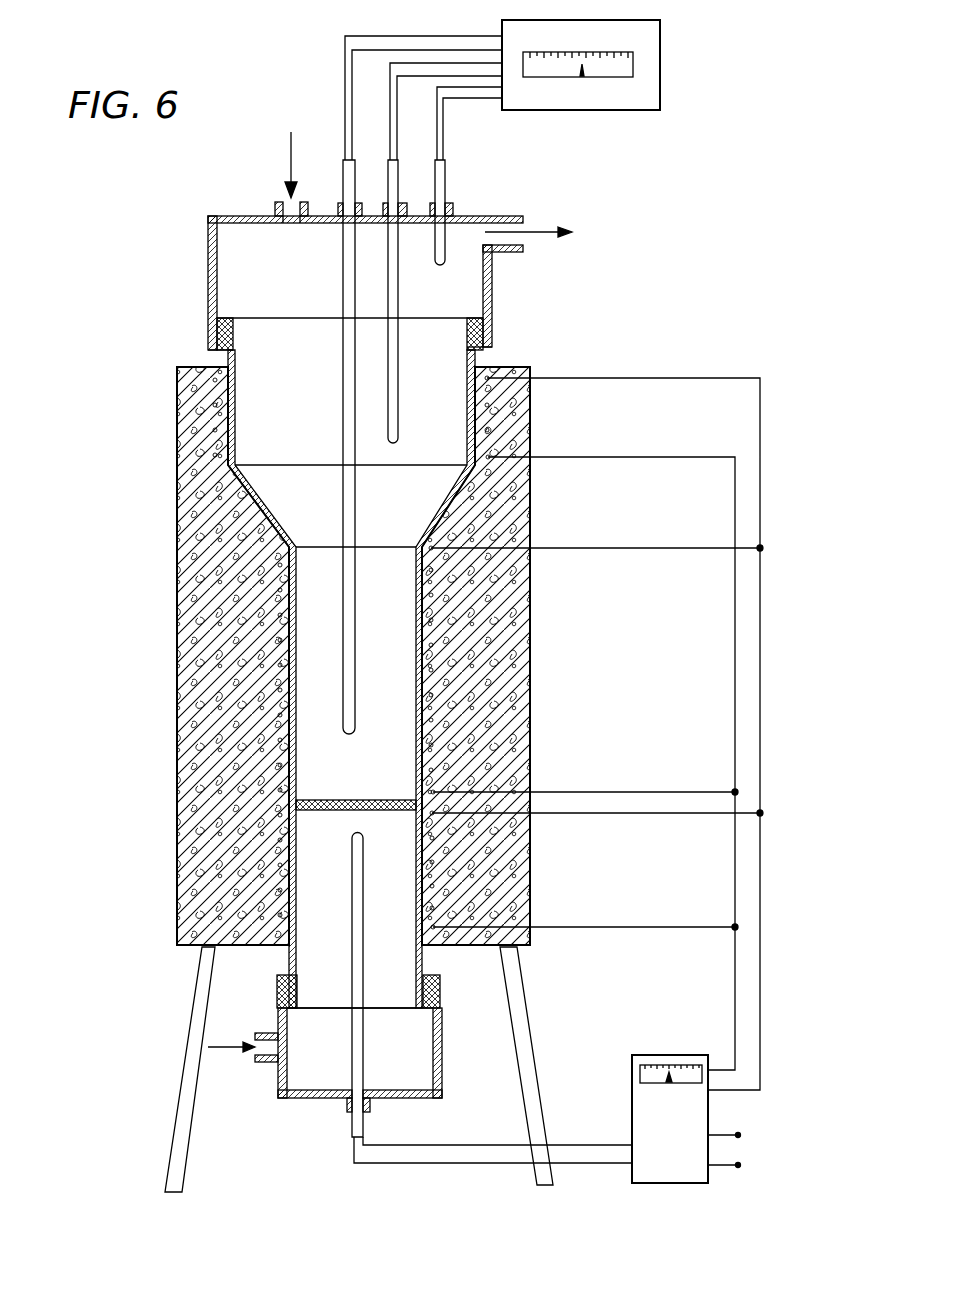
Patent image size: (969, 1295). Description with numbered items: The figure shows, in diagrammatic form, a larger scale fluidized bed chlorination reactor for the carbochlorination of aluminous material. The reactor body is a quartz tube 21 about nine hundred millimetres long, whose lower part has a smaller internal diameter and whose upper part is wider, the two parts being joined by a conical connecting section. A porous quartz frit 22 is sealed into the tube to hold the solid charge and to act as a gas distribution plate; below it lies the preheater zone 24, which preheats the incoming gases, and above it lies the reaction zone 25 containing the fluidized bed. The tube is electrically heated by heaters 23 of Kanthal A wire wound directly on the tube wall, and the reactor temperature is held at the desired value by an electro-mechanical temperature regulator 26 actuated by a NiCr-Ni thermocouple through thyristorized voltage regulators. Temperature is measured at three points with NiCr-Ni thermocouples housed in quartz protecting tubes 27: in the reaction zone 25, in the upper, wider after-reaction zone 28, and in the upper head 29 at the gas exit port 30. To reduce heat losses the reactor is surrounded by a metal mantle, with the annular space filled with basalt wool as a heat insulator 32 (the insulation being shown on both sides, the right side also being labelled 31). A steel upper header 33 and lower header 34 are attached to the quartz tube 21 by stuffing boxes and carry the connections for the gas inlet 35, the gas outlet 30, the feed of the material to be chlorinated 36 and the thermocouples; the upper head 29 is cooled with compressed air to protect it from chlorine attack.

The quartz tube 21 is at (413, 598).
The porous quartz frit 22 is at (343, 812).
The heaters 23 is at (277, 582).
The preheater zone 24 is at (400, 930).
The reaction zone 25 is at (400, 700).
The electro-mechanical temperature regulator 26 is at (685, 1167).
The quartz protecting tubes 27 is at (437, 176).
The after-reaction zone 28 is at (448, 397).
The upper head 29 is at (300, 290).
The gas exit port 30 is at (523, 218).
The insulation 31 is at (530, 598).
The heat insulator 32 is at (507, 697).
The upper header 33 is at (492, 296).
The lower header 34 is at (442, 1045).
The gas inlet 35 is at (252, 1056).
The feed of material to be chlorinated 36 is at (297, 200).